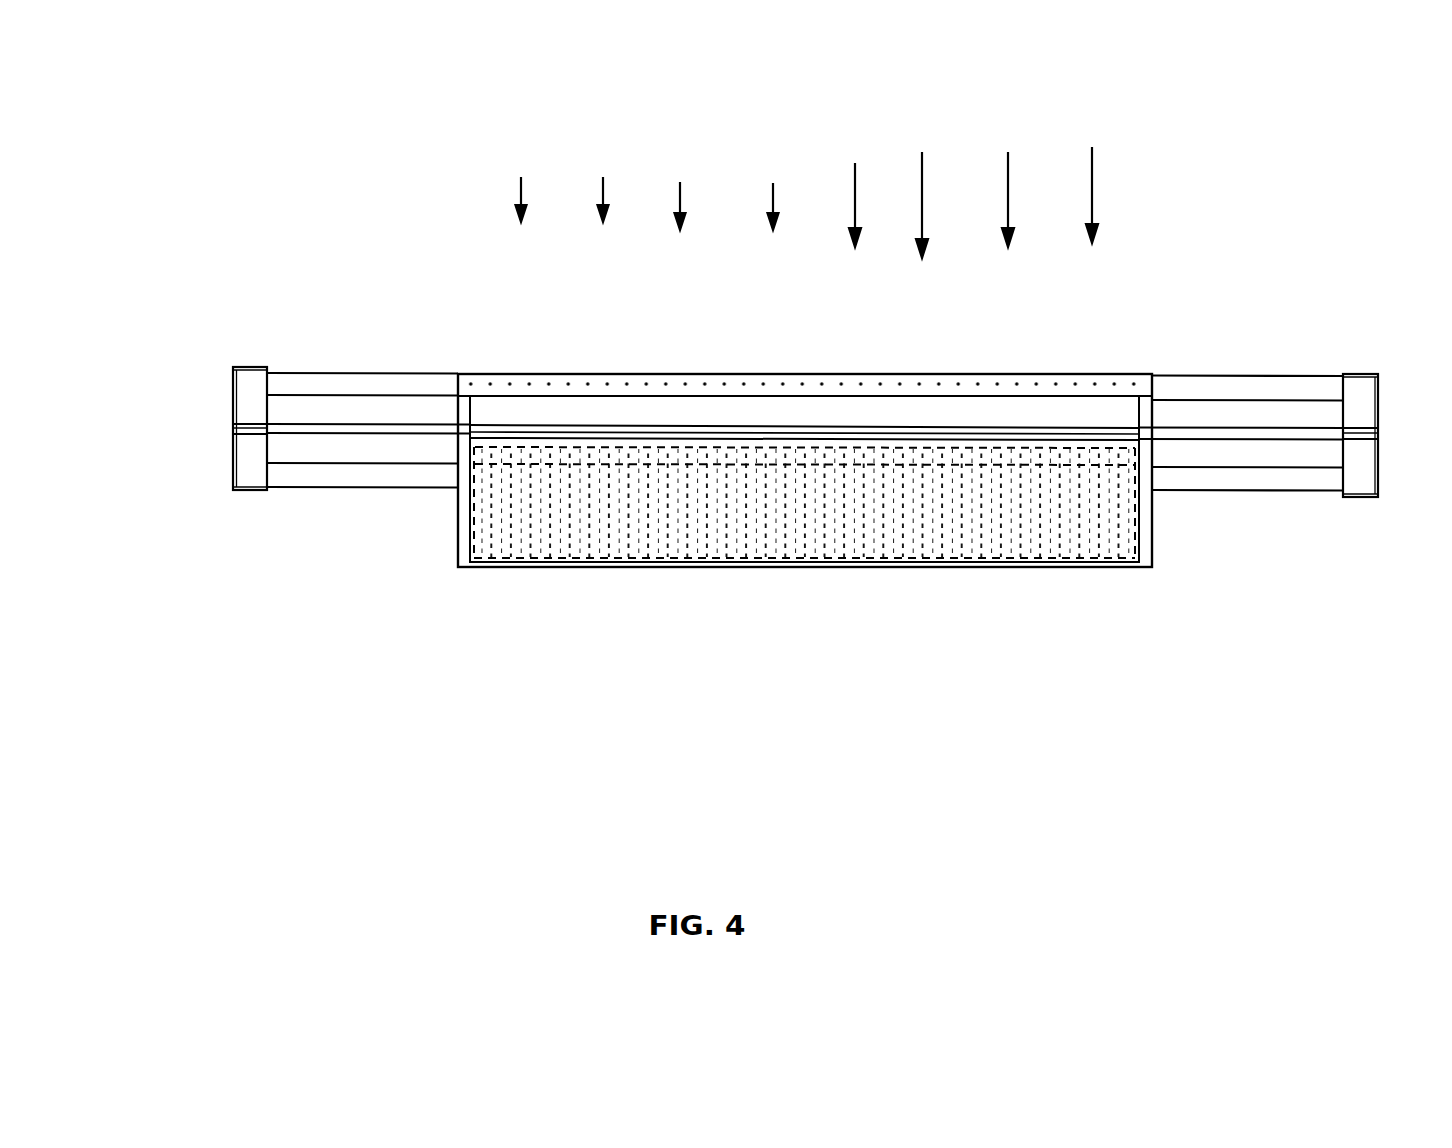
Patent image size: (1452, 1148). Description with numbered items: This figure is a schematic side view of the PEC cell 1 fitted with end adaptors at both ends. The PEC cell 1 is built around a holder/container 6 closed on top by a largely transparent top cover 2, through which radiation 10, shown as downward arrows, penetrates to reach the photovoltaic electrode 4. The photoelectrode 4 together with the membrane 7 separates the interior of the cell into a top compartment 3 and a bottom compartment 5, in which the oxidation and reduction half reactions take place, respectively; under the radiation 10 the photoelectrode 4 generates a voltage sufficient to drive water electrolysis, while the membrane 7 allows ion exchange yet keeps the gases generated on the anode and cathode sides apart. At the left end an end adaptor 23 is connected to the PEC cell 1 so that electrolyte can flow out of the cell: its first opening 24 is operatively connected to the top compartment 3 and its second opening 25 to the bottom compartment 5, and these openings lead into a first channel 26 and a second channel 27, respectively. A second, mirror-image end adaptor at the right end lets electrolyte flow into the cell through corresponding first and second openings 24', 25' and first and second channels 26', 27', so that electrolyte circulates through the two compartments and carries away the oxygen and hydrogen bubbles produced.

The PEC cell 1 is at (600, 661).
The top cover 2 is at (565, 380).
The top compartment 3 is at (647, 413).
The photovoltaic electrode 4 is at (745, 432).
The bottom compartment 5 is at (799, 448).
The holder/container 6 is at (1128, 582).
The membrane 7 is at (932, 503).
The radiation 10 is at (1002, 185).
The end adaptor 23 is at (216, 342).
The first opening 24 is at (362, 378).
The second opening 25 is at (362, 503).
The first channel 26 is at (359, 302).
The second channel 27 is at (365, 497).
The first opening of second end adaptor 24' is at (1247, 400).
The second opening of second end adaptor 25' is at (1247, 519).
The first channel of second end adaptor 26' is at (1250, 354).
The second channel of second end adaptor 27' is at (1285, 530).